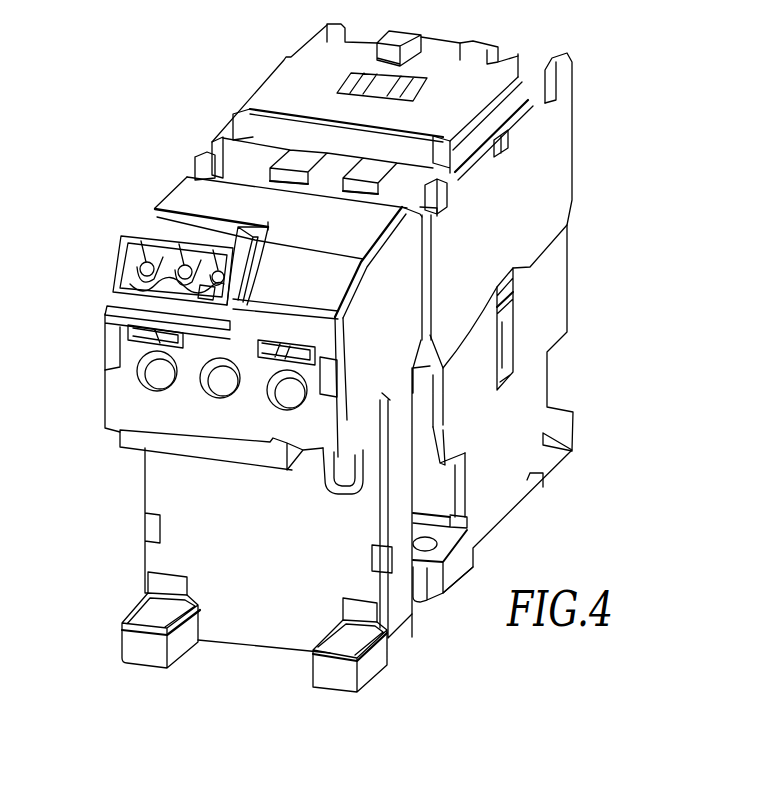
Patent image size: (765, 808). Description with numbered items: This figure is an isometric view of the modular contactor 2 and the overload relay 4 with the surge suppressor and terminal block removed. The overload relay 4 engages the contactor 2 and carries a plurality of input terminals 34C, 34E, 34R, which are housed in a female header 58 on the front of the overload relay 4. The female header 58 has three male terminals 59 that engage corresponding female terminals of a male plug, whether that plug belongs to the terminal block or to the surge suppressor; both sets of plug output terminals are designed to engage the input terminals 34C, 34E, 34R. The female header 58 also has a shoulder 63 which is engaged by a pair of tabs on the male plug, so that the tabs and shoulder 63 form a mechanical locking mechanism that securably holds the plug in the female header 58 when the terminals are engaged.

The modular contactor 2 is at (565, 147).
The overload relay 4 is at (112, 410).
The female header 58 is at (130, 262).
The male terminals 59 is at (213, 252).
The shoulder 63 is at (239, 226).
The input terminal 34C is at (107, 307).
The input terminal 34E is at (130, 323).
The input terminal 34R is at (207, 293).